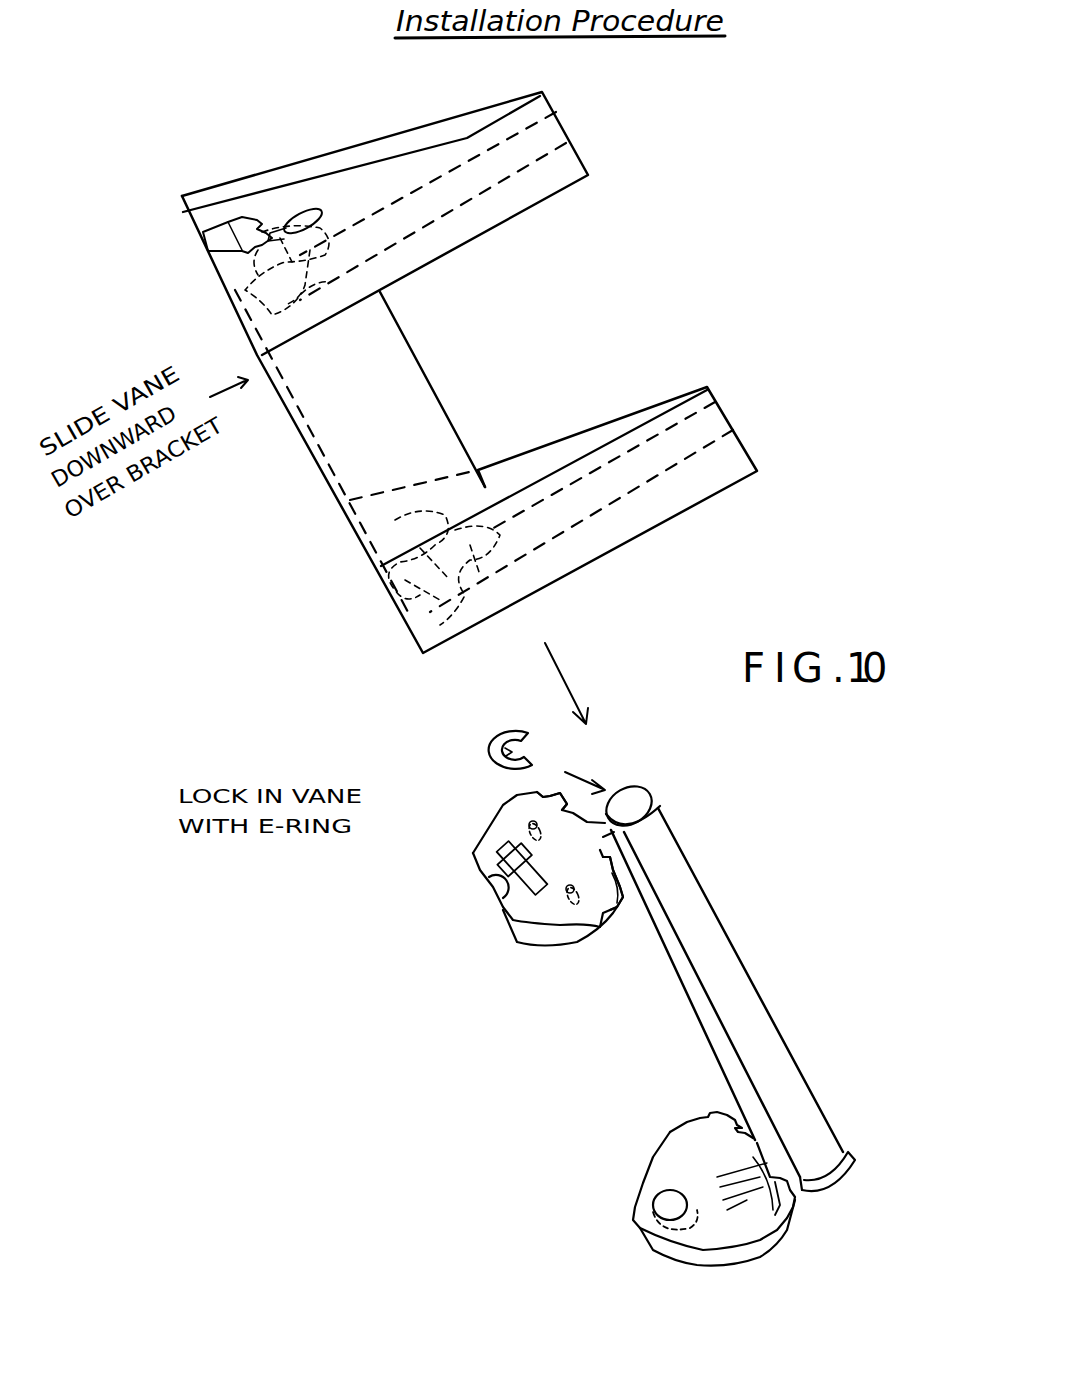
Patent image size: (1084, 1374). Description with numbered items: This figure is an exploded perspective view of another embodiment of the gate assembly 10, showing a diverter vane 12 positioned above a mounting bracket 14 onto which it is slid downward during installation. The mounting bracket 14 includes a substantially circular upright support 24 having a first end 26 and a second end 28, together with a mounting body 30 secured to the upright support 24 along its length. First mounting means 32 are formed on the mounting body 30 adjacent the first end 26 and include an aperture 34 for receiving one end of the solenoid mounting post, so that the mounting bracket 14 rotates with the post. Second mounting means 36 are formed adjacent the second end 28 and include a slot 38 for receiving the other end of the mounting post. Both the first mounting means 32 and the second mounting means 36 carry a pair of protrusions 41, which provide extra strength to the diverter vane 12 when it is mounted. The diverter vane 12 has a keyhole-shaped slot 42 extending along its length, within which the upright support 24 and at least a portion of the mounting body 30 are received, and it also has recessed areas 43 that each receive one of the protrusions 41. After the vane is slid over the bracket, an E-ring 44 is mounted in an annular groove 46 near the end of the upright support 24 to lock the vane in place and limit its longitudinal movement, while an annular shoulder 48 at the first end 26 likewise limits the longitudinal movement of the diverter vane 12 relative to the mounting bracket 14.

The gate assembly 10 is at (722, 263).
The diverter vane 12 is at (574, 170).
The mounting bracket 14 is at (764, 968).
The upright support 24 is at (700, 916).
The first end 26 is at (832, 1150).
The second end 28 is at (660, 838).
The mounting body 30 is at (680, 978).
The first mounting means 32 is at (760, 1276).
The aperture 34 is at (666, 1206).
The second mounting means 36 is at (470, 830).
The slot 38 is at (494, 897).
The protrusions 41 is at (612, 956).
The keyhole-shaped slot 42 is at (312, 212).
The recessed areas 43 is at (253, 262).
The E-ring 44 is at (492, 742).
The annular groove 46 is at (655, 808).
The annular shoulder 48 is at (850, 1158).